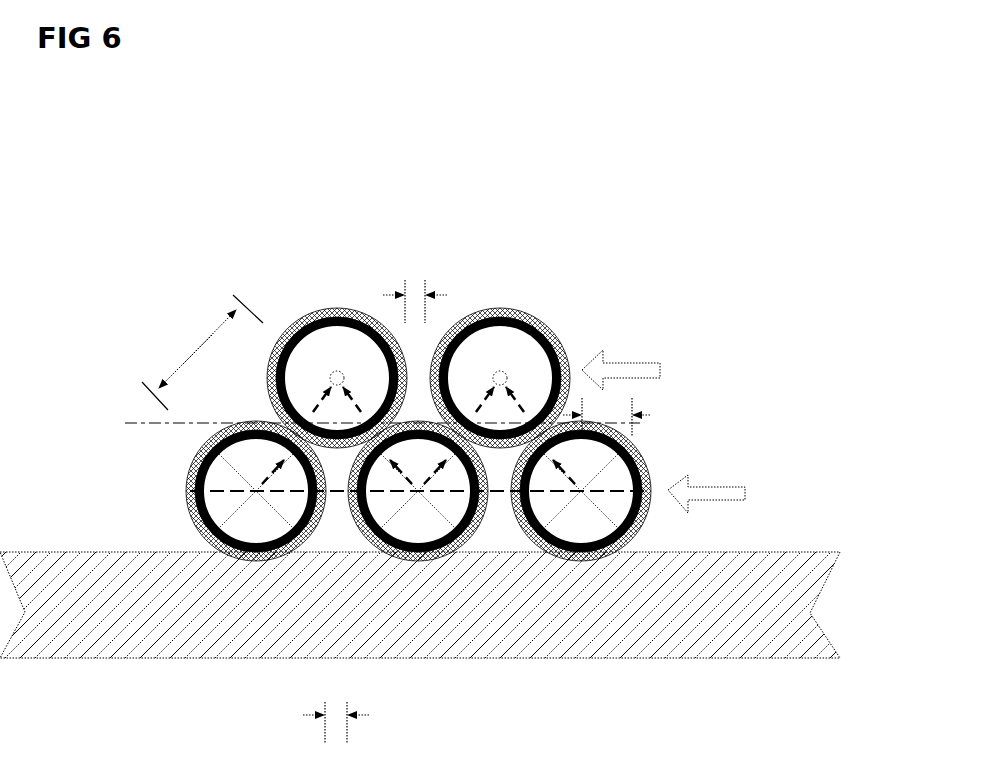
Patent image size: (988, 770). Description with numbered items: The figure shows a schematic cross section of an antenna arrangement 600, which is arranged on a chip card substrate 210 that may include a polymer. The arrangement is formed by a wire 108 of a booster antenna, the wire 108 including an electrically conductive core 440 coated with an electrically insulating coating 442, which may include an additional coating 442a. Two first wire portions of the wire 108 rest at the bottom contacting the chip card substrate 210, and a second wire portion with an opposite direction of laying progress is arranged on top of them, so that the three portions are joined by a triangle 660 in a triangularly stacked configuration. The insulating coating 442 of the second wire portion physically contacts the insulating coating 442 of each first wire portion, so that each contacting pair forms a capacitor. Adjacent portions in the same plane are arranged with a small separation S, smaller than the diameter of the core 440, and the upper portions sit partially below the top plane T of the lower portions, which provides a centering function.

The antenna arrangement 600 is at (782, 148).
The chip card substrate 210 is at (758, 627).
The wire 108 is at (459, 375).
The electrically conductive core 440 is at (313, 357).
The electrically insulating coating 442 is at (345, 318).
The additional coating 442a is at (327, 308).
The triangle 660 is at (338, 494).